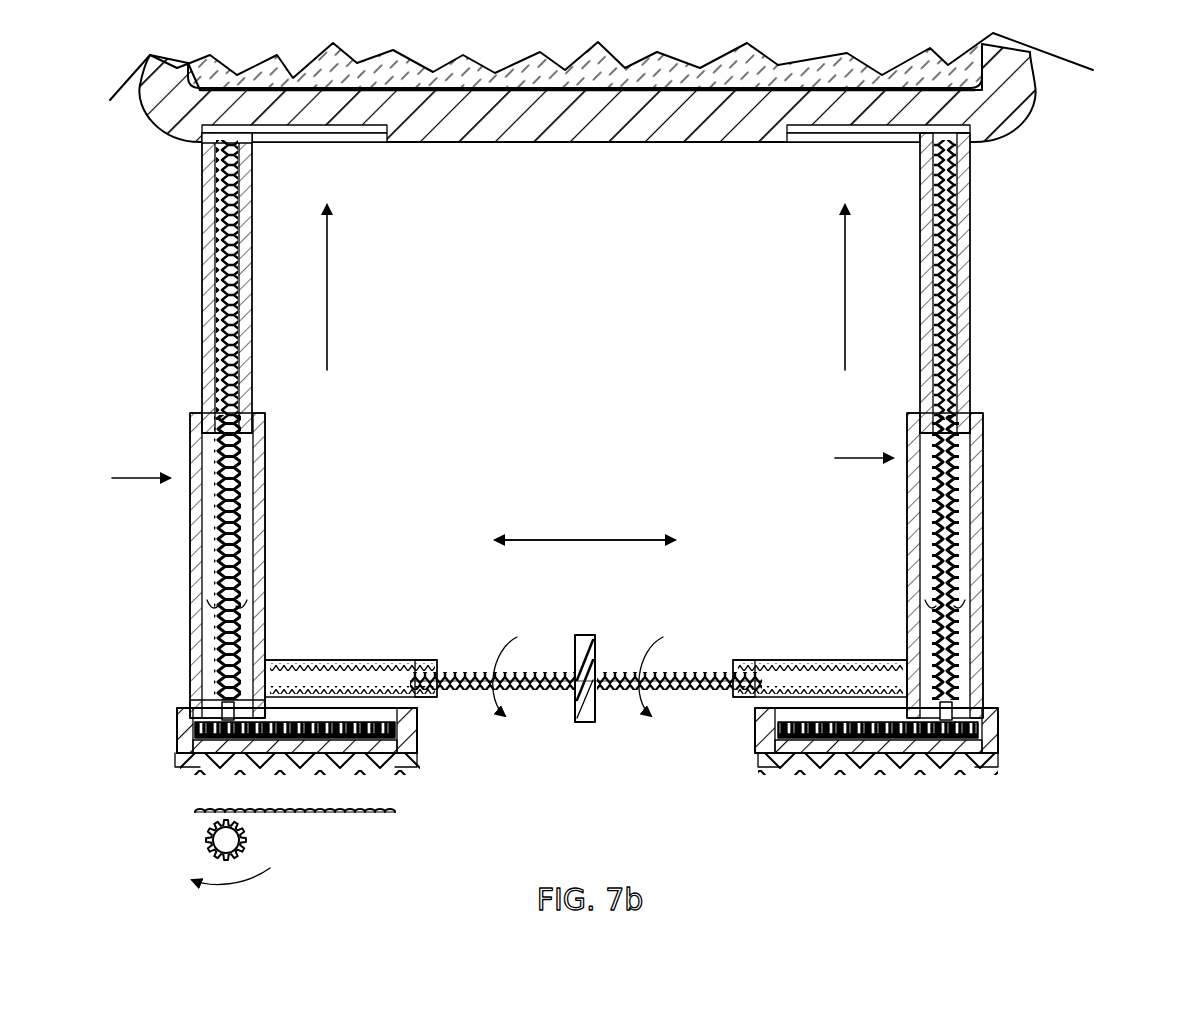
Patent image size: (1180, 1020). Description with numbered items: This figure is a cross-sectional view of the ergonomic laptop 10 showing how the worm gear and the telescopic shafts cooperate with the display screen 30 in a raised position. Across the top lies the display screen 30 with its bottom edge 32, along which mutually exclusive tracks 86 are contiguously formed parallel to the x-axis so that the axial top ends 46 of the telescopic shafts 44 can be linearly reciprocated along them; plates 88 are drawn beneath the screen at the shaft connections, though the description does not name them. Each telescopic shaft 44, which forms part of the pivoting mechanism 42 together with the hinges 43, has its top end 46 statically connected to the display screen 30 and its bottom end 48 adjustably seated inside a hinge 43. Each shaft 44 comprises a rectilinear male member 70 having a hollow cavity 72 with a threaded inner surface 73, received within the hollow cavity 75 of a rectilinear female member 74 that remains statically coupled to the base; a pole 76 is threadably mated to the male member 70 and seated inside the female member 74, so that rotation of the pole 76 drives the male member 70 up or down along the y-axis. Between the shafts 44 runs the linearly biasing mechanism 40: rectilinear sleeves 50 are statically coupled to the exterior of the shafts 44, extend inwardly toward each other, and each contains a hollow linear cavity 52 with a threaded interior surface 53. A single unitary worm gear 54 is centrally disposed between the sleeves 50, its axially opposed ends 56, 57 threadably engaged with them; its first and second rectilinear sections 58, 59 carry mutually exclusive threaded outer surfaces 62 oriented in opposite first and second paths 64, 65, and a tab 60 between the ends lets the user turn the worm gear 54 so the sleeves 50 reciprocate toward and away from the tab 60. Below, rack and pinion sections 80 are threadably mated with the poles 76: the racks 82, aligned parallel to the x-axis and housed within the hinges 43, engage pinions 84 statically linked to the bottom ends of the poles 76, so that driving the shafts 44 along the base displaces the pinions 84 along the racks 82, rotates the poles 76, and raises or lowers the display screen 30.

The ergonomic laptop 10 is at (1152, 122).
The display screen 30 is at (162, 118).
The bottom edge 32 is at (622, 143).
The linearly biasing mechanism 40 is at (468, 648).
The pivoting mechanism 42 is at (160, 732).
The hinges 43 is at (180, 758).
The telescopic shafts 44 is at (488, 349).
The axial top ends 46 is at (205, 150).
The bottom ends 48 is at (195, 705).
The rectilinear sleeves 50 is at (287, 665).
The hollow linear cavity 52 is at (333, 665).
The threaded interior surface 53 is at (383, 665).
The worm gear 54 is at (552, 708).
The axially opposed end 56 is at (408, 773).
The axially opposed end 57 is at (730, 690).
The first rectilinear section 58 is at (515, 672).
The second rectilinear section 59 is at (693, 672).
The tab 60 is at (585, 638).
The threaded outer surfaces 62 is at (722, 665).
The first path 64 is at (406, 665).
The second path 65 is at (838, 690).
The rectilinear male member 70 is at (205, 205).
The hollow cavity 72 is at (950, 183).
The threaded inner surface 73 is at (968, 218).
The rectilinear female member 74 is at (195, 508).
The hollow cavity 75 is at (960, 487).
The pole 76 is at (232, 515).
The rack and pinion sections 80 is at (325, 815).
The racks 82 is at (303, 735).
The pinions 84 is at (385, 750).
The tracks 86 is at (212, 770).
The mounting plate 88 is at (355, 138).